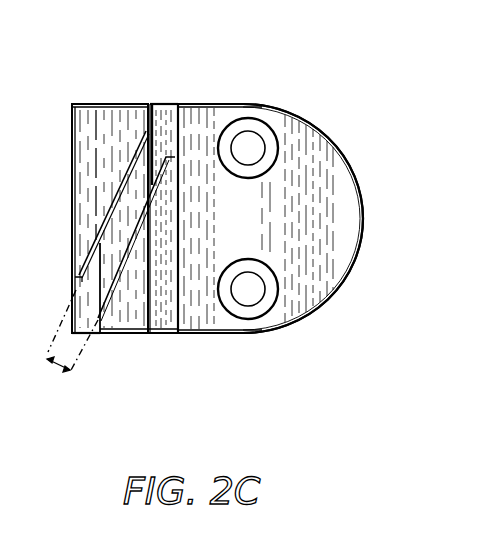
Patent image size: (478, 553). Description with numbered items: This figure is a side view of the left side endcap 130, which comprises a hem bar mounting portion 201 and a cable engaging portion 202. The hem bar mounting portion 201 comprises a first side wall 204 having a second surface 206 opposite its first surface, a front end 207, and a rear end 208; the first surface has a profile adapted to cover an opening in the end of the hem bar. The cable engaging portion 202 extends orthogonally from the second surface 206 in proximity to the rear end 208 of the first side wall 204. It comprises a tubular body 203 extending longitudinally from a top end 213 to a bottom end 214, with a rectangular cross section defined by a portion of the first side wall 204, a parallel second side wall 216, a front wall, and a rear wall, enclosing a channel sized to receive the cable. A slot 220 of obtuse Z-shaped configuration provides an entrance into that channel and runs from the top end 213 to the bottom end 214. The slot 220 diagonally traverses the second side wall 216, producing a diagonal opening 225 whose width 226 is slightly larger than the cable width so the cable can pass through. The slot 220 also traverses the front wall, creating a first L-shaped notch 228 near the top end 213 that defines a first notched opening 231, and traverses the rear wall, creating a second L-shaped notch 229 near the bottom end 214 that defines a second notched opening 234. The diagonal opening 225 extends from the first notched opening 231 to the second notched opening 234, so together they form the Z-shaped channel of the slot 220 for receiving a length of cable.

The endcap 130 is at (197, 41).
The hem bar mounting portion 201 is at (233, 104).
The cable engaging portion 202 is at (117, 103).
The tubular body 203 is at (97, 104).
The first side wall 204 is at (340, 143).
The second surface 206 is at (320, 295).
The front end 207 is at (363, 205).
The rear end 208 is at (73, 133).
The top end 213 is at (88, 103).
The bottom end 214 is at (132, 336).
The second side wall 216 is at (100, 173).
The slot 220 is at (112, 200).
The diagonal opening 225 is at (117, 228).
The width 226 is at (52, 378).
The first L-shaped notch 228 is at (168, 137).
The second L-shaped notch 229 is at (77, 300).
The first notched opening 231 is at (150, 104).
The second notched opening 234 is at (100, 335).